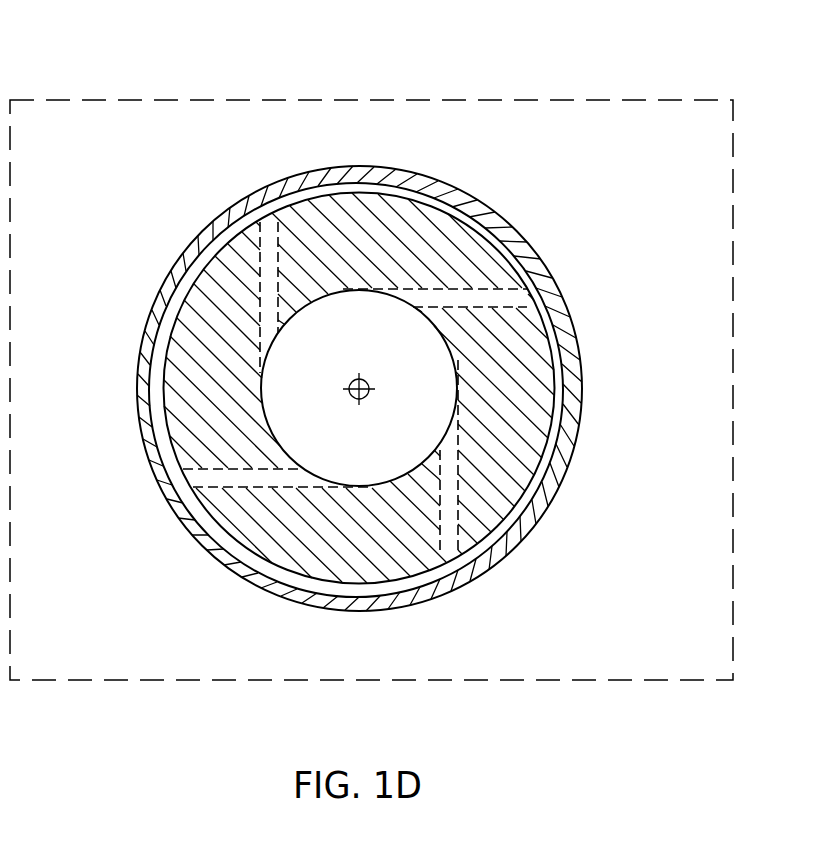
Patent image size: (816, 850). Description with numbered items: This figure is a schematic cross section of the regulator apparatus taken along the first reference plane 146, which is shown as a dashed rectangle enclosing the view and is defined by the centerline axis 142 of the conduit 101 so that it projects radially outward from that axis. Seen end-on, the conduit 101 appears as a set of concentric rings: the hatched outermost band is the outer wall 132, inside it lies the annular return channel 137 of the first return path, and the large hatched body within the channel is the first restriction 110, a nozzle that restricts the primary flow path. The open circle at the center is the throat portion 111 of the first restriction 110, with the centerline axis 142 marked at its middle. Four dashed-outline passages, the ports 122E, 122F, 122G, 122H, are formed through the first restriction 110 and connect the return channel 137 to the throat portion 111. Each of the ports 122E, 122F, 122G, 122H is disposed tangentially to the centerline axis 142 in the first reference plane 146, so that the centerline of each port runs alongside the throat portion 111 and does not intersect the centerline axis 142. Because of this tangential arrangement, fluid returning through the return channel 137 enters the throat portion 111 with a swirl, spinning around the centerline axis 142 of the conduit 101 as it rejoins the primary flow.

The first reference plane 146 is at (650, 100).
The conduit 101 is at (437, 178).
The outer wall 132 is at (187, 252).
The return channel 137 is at (562, 392).
The first restriction 110 is at (532, 437).
The throat portion 111 is at (432, 363).
The centerline axis 142 is at (352, 381).
The port 122E is at (483, 297).
The port 122F is at (270, 279).
The port 122G is at (233, 477).
The port 122H is at (448, 517).